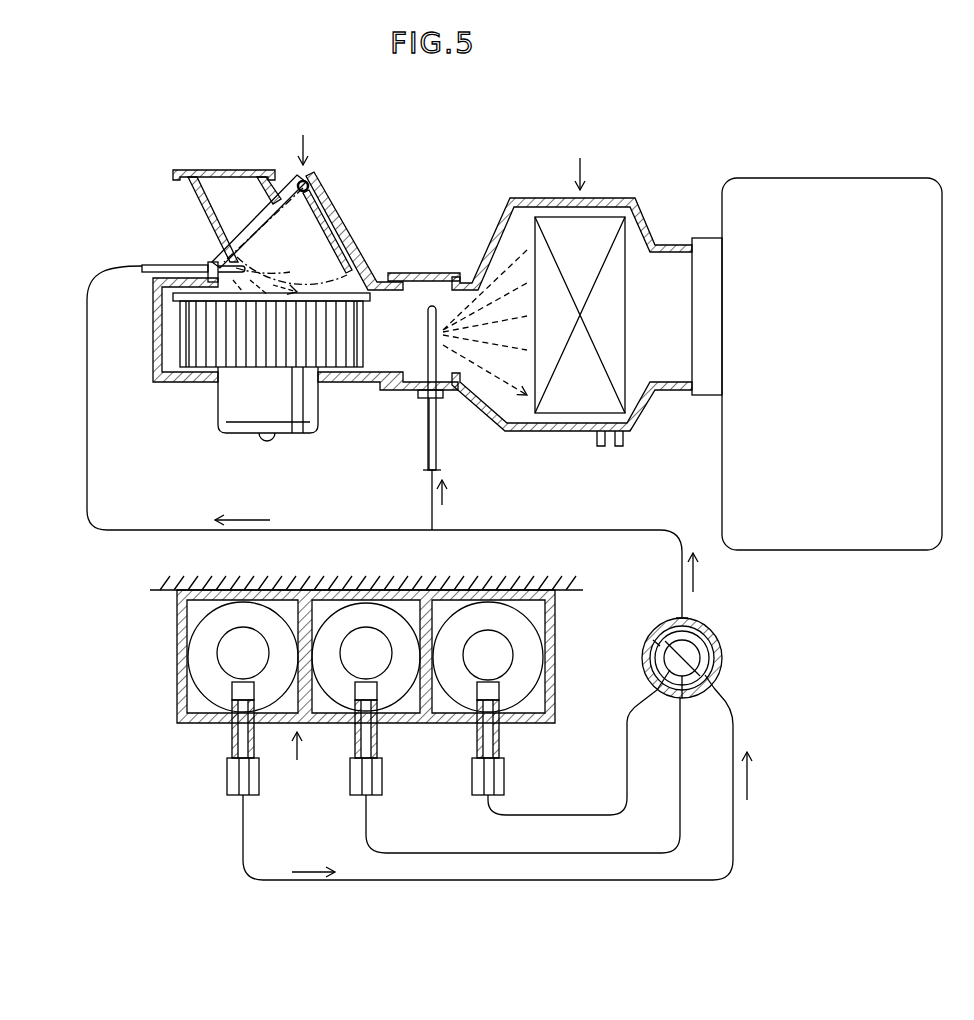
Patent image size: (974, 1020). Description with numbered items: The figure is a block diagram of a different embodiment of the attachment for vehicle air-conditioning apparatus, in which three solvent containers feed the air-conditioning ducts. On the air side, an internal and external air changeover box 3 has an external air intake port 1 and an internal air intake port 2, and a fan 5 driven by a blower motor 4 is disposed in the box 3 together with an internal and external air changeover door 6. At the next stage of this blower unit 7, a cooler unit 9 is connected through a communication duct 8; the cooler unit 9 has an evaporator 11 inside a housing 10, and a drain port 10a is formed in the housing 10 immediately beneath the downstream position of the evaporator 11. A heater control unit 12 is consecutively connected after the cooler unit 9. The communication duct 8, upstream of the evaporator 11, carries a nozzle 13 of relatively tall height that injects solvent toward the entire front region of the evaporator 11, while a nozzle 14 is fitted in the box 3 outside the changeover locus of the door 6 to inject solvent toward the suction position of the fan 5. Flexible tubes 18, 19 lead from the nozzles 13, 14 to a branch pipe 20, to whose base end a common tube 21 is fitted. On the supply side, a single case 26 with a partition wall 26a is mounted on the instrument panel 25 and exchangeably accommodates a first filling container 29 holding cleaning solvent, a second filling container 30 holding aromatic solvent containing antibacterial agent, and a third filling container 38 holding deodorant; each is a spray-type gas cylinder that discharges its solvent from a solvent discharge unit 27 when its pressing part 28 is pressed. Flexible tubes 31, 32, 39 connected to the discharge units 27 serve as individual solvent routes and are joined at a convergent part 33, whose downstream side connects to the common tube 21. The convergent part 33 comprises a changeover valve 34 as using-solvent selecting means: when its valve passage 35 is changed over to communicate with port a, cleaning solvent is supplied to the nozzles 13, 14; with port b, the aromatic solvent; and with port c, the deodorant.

The external air intake port 1 is at (241, 171).
The internal air intake port 2 is at (332, 206).
The internal and external air changeover box 3 is at (150, 325).
The blower motor 4 is at (232, 401).
The fan 5 is at (180, 340).
The internal and external air changeover door 6 is at (352, 238).
The blower unit 7 is at (303, 135).
The communication duct 8 is at (431, 272).
The cooler unit 9 is at (578, 159).
The housing 10 is at (525, 197).
The drain port 10a is at (609, 446).
The evaporator 11 is at (613, 305).
The heater control unit 12 is at (796, 343).
The nozzle 13 is at (427, 338).
The nozzle 14 is at (238, 266).
The flexible tube 18 is at (427, 440).
The flexible tube 19 is at (156, 264).
The branch pipe 20 is at (426, 528).
The common tube 21 is at (583, 536).
The instrument panel 25 is at (165, 591).
The case 26 is at (289, 759).
The partition wall 26a is at (320, 590).
The solvent discharge unit 27 is at (232, 740).
The pressing part 28 is at (368, 650).
The first filling container 29 is at (190, 686).
The second filling container 30 is at (430, 722).
The flexible tube 31 is at (228, 788).
The flexible tube 32 is at (352, 786).
The convergent part 33 is at (712, 628).
The changeover valve 34 is at (720, 653).
The valve passage 35 is at (662, 626).
The third filling container 38 is at (535, 692).
The flexible tube 39 is at (497, 781).
The port a is at (716, 680).
The port b is at (690, 700).
The port c is at (662, 700).